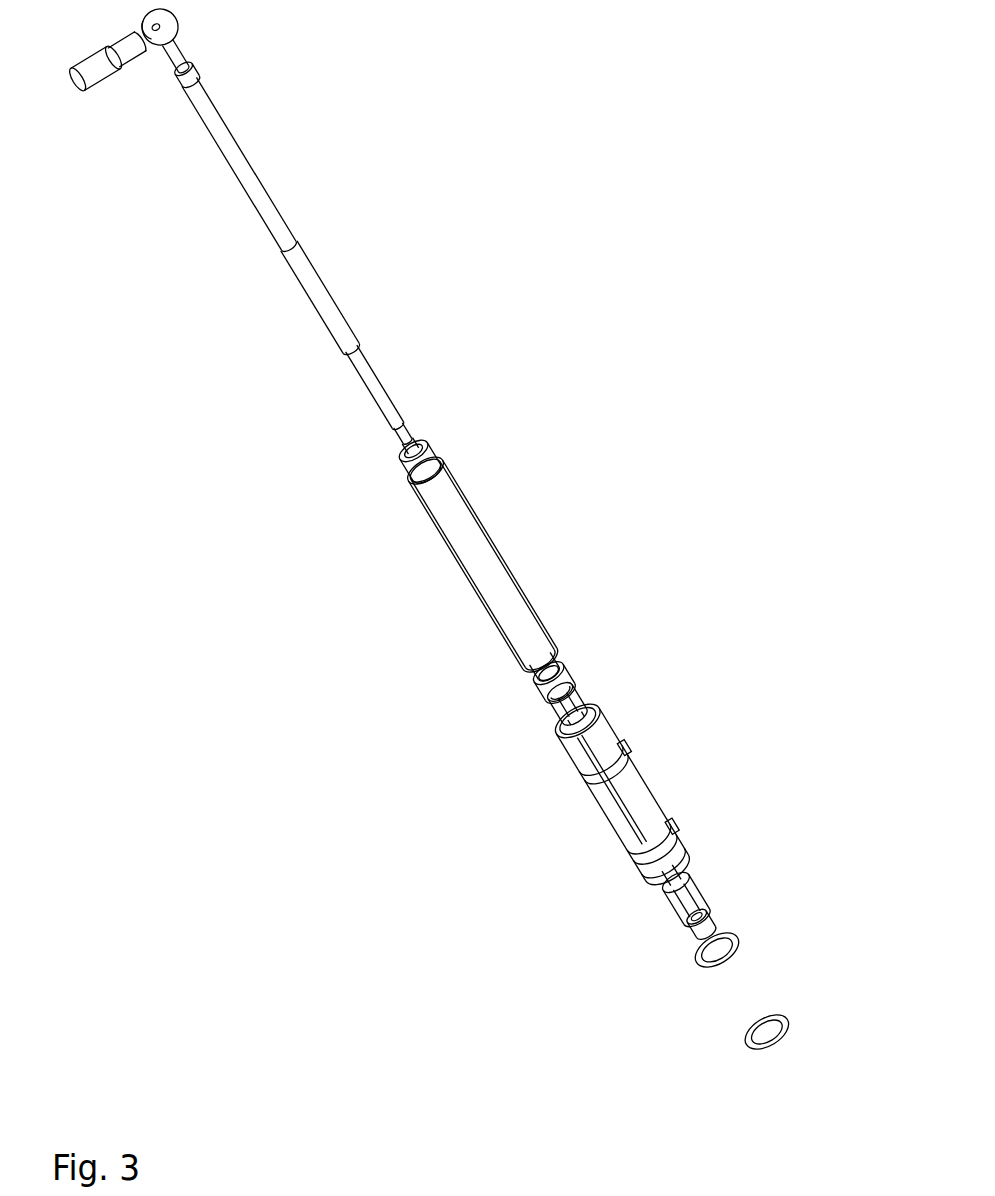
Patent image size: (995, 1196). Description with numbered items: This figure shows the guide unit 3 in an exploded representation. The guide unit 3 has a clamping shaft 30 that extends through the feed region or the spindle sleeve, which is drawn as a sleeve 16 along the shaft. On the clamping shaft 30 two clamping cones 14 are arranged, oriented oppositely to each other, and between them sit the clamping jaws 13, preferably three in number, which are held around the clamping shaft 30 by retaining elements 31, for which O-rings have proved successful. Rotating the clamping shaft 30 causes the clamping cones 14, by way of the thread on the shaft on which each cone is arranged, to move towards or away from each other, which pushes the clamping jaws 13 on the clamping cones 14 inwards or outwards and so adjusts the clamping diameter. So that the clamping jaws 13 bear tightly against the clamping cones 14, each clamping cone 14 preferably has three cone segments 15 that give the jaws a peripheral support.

The guide unit 3 is at (492, 187).
The clamping shaft 30 is at (270, 215).
The sleeve 16 is at (492, 557).
The cone segments 15 is at (573, 700).
The clamping cones 14 is at (532, 708).
The clamping jaws 13 is at (610, 807).
The retaining elements 31 is at (732, 947).